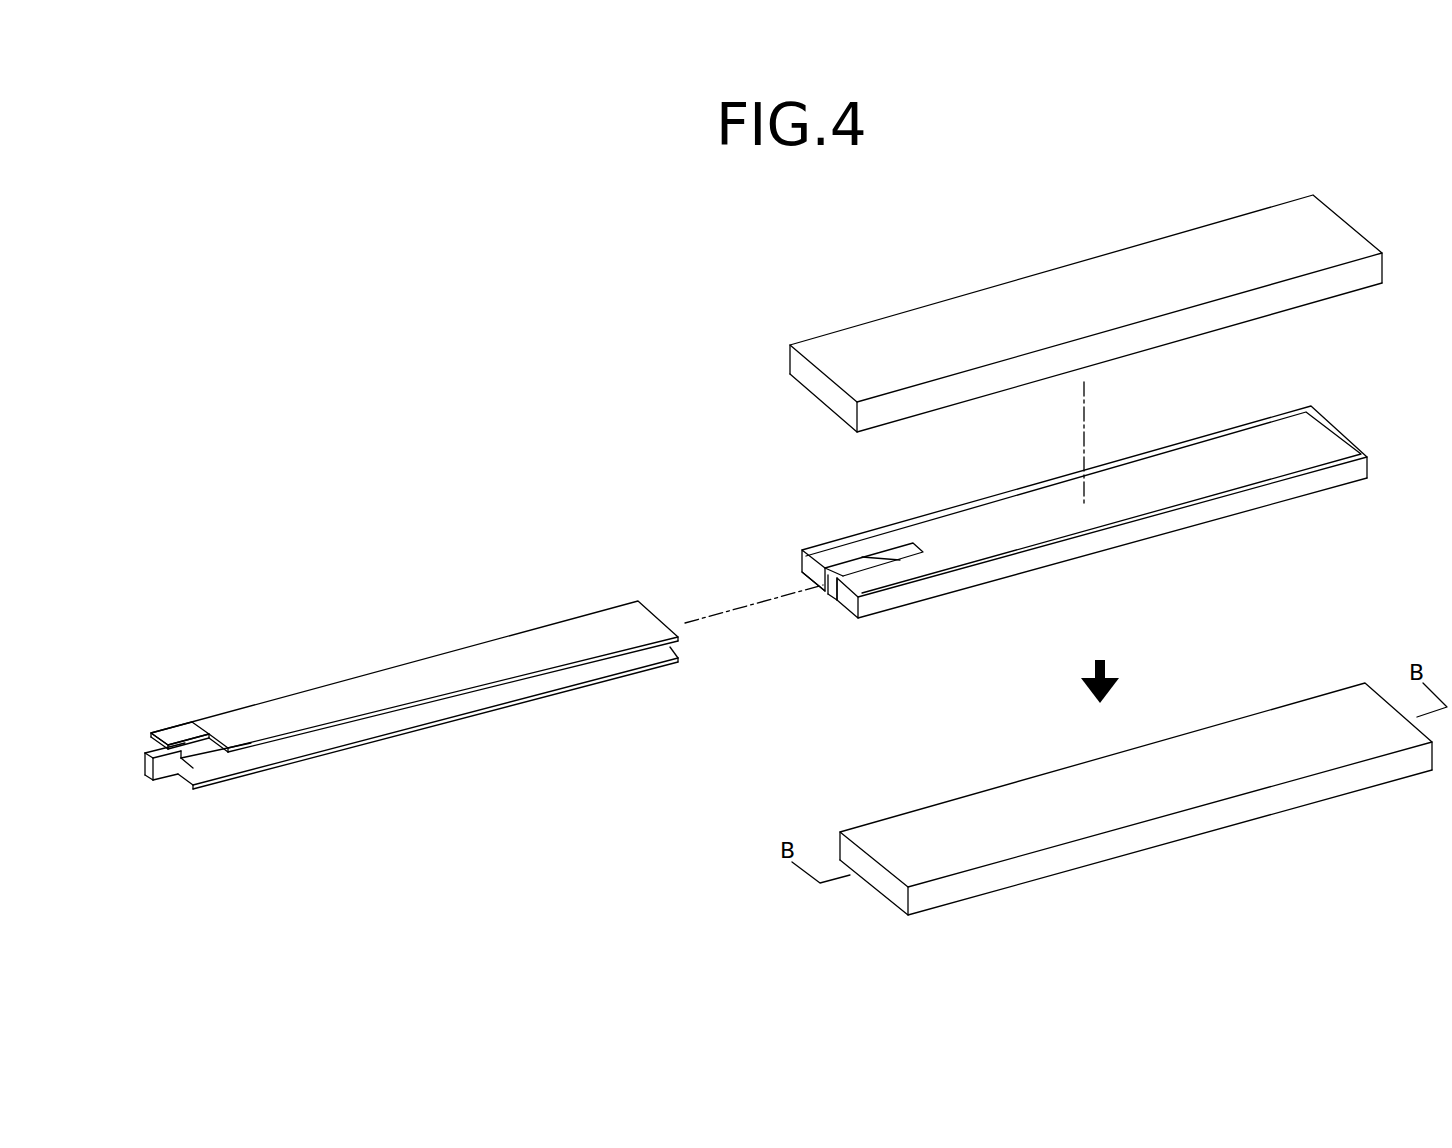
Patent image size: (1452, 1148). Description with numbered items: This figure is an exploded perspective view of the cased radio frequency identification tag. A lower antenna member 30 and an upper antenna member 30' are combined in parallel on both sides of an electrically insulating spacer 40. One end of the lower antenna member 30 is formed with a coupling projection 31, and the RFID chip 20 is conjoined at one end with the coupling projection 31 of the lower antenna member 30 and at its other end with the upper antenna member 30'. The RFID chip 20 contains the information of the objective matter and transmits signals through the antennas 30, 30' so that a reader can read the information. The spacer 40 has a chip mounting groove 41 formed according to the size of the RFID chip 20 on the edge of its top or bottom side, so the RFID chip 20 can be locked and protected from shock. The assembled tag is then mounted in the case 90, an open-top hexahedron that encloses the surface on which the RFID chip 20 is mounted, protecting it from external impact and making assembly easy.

The case 90 is at (988, 320).
The spacer 40 is at (1080, 512).
The chip mounting groove 41 is at (870, 563).
The upper antenna member 30' is at (406, 647).
The lower antenna member 30 is at (411, 769).
The RFID chip 20 is at (210, 746).
The coupling projection 31 is at (147, 777).